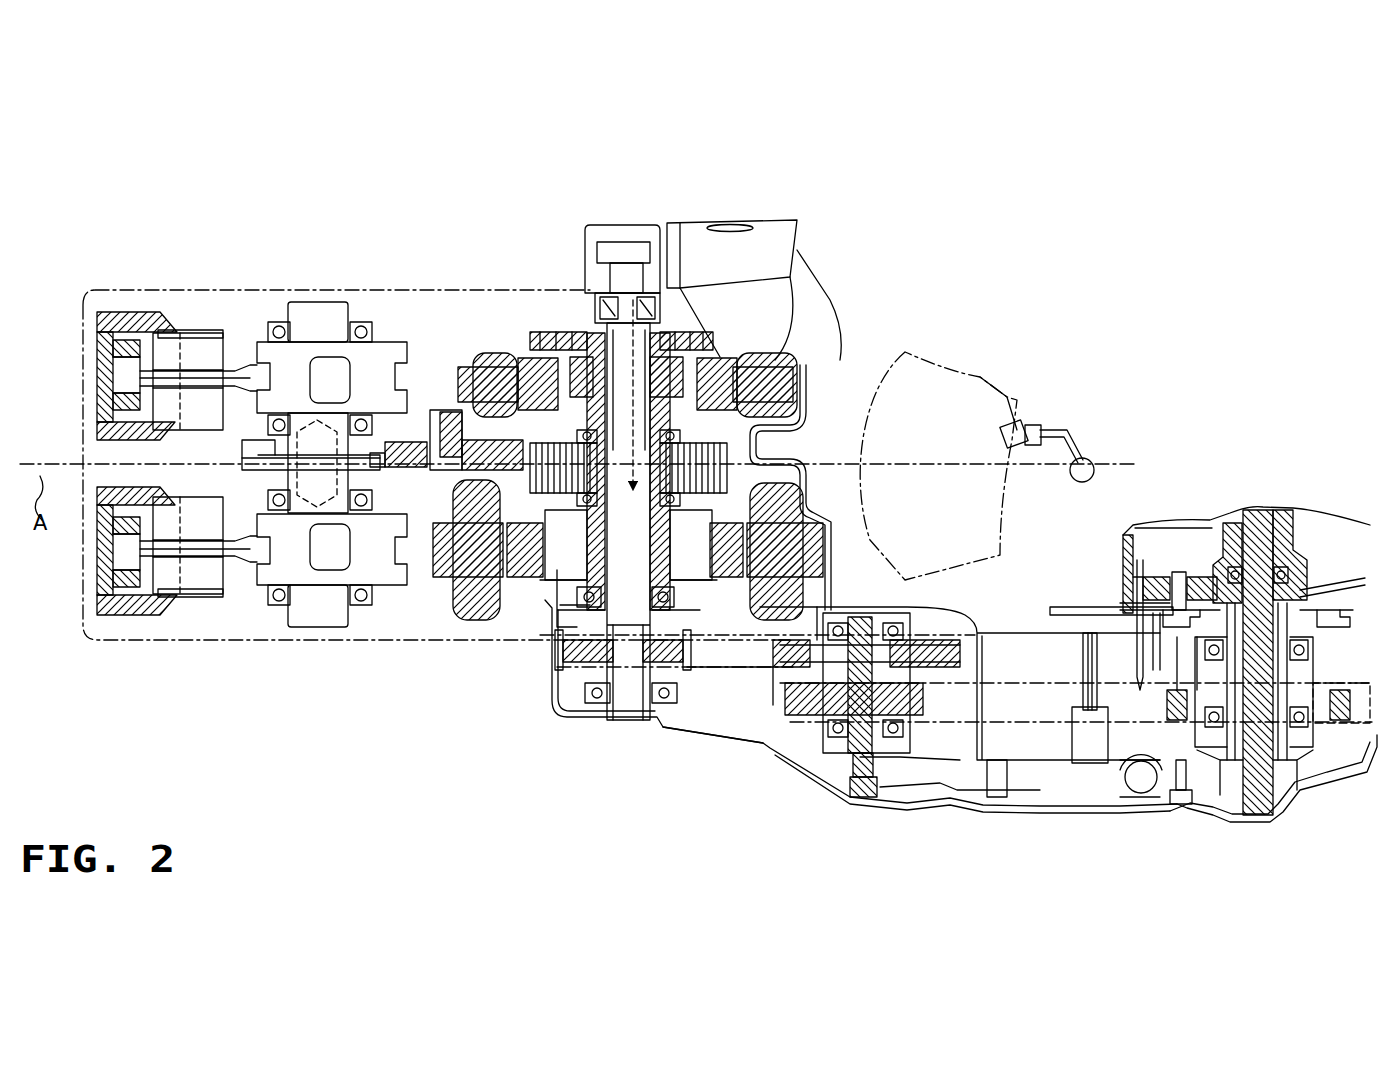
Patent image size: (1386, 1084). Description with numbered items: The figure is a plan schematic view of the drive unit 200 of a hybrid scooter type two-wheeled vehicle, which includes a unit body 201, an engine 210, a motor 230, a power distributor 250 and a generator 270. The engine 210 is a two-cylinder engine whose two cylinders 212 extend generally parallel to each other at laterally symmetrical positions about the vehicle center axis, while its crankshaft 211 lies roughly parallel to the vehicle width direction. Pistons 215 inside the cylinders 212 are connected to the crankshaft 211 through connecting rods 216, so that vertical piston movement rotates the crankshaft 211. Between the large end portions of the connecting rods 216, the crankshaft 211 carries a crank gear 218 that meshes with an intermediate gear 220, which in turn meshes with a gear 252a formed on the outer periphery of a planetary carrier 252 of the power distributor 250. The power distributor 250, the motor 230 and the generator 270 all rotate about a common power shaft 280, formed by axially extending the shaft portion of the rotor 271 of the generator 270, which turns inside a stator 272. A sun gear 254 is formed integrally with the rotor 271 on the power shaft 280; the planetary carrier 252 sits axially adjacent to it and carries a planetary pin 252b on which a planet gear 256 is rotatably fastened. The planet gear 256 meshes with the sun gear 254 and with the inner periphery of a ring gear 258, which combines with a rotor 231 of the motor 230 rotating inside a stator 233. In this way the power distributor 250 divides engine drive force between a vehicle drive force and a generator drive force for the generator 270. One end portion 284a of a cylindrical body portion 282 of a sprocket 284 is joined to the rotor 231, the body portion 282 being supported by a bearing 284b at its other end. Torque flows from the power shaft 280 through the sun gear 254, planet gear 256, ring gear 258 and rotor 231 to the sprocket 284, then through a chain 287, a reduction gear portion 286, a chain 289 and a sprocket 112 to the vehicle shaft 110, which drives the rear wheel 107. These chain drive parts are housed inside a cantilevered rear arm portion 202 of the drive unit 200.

The drive unit 200 is at (968, 238).
The unit body 201 is at (190, 640).
The cantilevered rear arm portion 202 is at (933, 806).
The rear wheel 107 is at (952, 400).
The vehicle shaft 110 is at (1265, 515).
The sprocket 112 is at (1172, 703).
The engine 210 is at (225, 318).
The crankshaft 211 is at (333, 312).
The cylinders 212 is at (118, 320).
The pistons 215 is at (120, 607).
The connecting rods 216 is at (170, 335).
The crank gear 218 is at (418, 433).
The intermediate gear 220 is at (452, 405).
The motor 230 is at (471, 635).
The rotor 231 is at (703, 610).
The stator 233 is at (457, 600).
The power distributor 250 is at (812, 437).
The planetary carrier 252 is at (790, 405).
The gear 252a is at (543, 343).
The planetary pin 252b is at (783, 355).
The sun gear 254 is at (555, 612).
The planet gear 256 is at (545, 360).
The ring gear 258 is at (745, 507).
The generator 270 is at (803, 368).
The rotor 271 is at (678, 330).
The stator 272 is at (545, 385).
The power shaft 280 is at (660, 232).
The cylindrical body portion 282 is at (590, 670).
The sprocket 284 is at (580, 667).
The one end portion 284a is at (640, 620).
The bearing 284b is at (600, 700).
The reduction gear portion 286 is at (807, 665).
The chain 287 is at (717, 650).
The chain 289 is at (1040, 705).